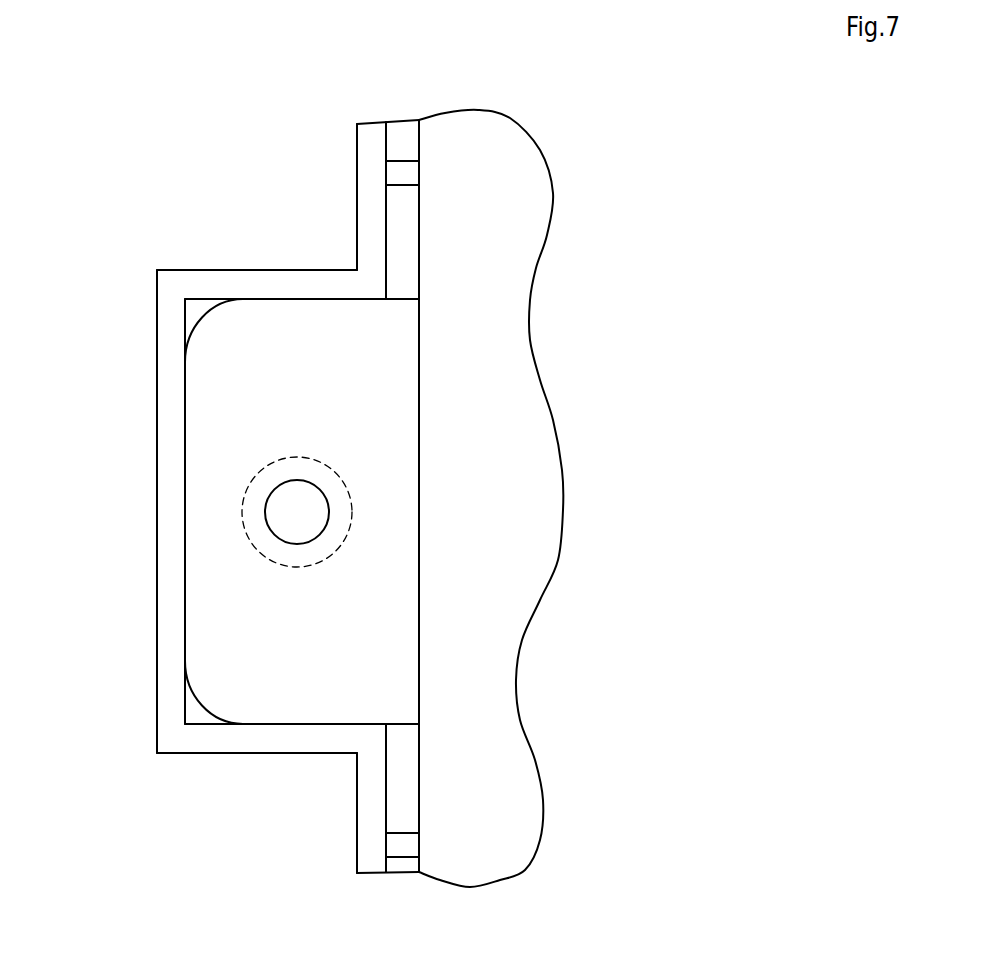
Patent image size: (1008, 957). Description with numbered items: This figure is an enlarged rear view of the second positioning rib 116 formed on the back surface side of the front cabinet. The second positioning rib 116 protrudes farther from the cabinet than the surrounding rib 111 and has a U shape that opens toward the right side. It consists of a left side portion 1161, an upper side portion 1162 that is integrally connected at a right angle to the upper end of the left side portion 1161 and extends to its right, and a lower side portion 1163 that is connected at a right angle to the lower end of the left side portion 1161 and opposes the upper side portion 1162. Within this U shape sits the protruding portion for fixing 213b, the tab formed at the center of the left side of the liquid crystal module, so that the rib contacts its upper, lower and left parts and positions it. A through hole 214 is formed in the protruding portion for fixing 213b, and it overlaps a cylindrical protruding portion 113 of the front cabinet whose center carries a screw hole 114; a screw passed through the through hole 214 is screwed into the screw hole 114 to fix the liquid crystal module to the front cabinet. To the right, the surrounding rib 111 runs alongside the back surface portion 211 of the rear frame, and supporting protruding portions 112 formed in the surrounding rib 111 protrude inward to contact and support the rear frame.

The surrounding rib 111 is at (375, 192).
The supporting protruding portion 112 is at (403, 170).
The protruding portion 113 is at (258, 540).
The screw hole 114 is at (280, 540).
The second positioning rib 116 is at (231, 504).
The left side portion 1161 is at (170, 511).
The upper side portion 1162 is at (230, 281).
The lower side portion 1163 is at (242, 744).
The back surface portion 211 is at (483, 774).
The protruding portion for fixing 213b is at (253, 414).
The through hole 214 is at (201, 595).